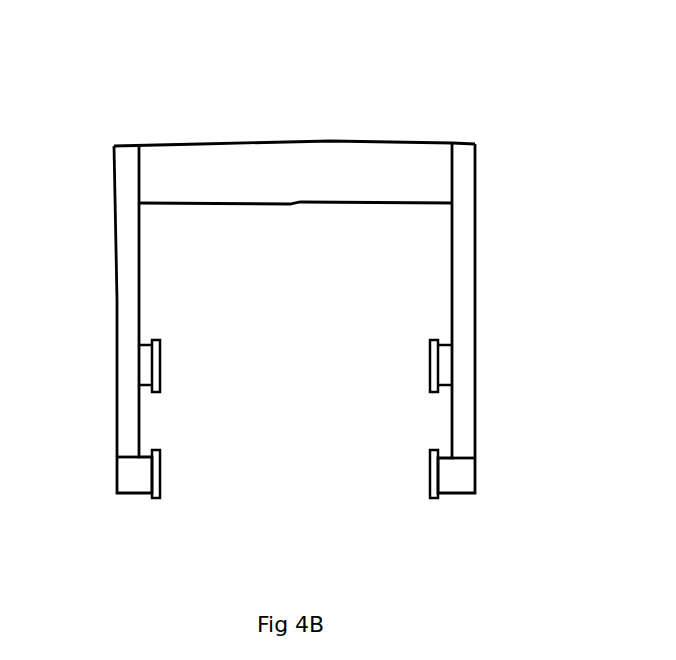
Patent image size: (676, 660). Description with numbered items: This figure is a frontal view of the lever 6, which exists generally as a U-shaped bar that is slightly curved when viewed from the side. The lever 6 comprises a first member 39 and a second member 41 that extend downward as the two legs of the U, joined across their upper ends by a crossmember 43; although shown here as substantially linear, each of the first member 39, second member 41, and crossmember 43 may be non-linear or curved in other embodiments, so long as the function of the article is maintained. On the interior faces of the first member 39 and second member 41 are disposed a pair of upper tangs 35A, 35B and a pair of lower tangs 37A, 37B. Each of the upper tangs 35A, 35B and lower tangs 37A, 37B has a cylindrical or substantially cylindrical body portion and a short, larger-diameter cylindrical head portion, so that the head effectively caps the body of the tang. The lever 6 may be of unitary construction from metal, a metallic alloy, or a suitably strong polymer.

The lever 6 is at (195, 137).
The crossmember 43 is at (254, 168).
The first member 39 is at (132, 258).
The second member 41 is at (462, 229).
The upper tang 35A is at (158, 355).
The upper tang 35B is at (428, 355).
The lower tang 37A is at (158, 467).
The lower tang 37B is at (428, 465).